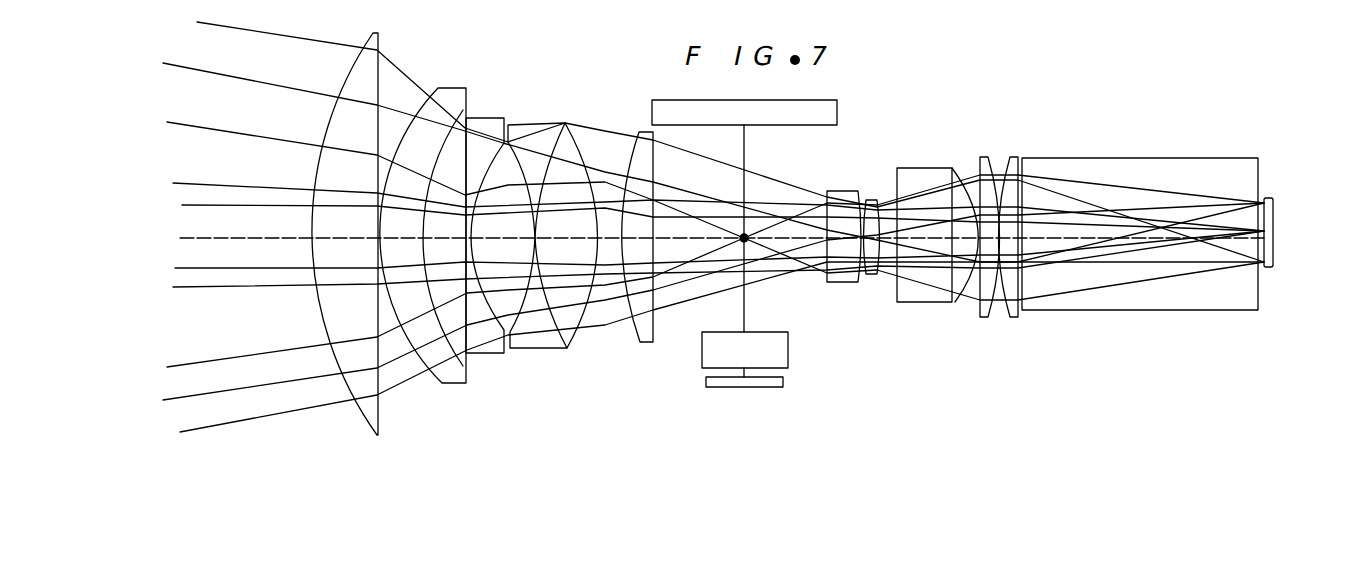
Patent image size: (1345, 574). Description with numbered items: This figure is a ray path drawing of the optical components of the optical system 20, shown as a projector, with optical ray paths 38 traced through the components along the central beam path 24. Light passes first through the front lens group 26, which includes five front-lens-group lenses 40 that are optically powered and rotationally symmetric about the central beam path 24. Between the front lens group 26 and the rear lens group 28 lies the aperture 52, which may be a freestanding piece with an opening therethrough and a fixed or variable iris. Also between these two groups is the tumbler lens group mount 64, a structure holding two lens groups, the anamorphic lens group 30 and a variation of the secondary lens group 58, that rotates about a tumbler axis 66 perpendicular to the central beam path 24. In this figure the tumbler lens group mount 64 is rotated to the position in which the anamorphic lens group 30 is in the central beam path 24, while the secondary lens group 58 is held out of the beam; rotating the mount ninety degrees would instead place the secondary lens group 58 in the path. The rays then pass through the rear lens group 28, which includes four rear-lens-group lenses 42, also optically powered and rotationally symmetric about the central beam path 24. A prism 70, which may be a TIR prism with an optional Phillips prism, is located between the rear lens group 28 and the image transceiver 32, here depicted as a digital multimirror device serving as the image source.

The optical system 20 is at (960, 75).
The central beam path 24 is at (193, 237).
The front lens group 26 is at (578, 128).
The rear lens group 28 is at (1017, 152).
The anamorphic lens group 30 is at (651, 343).
The image transceiver 32 is at (1273, 237).
The optical ray paths 38 is at (197, 123).
The front-lens-group lenses 40 is at (380, 421).
The rear-lens-group lenses 42 is at (928, 302).
The aperture 52 is at (878, 198).
The secondary lens group 58 is at (790, 342).
The tumbler lens group mount 64 is at (647, 124).
The tumbler axis 66 is at (747, 243).
The prism 70 is at (1136, 158).